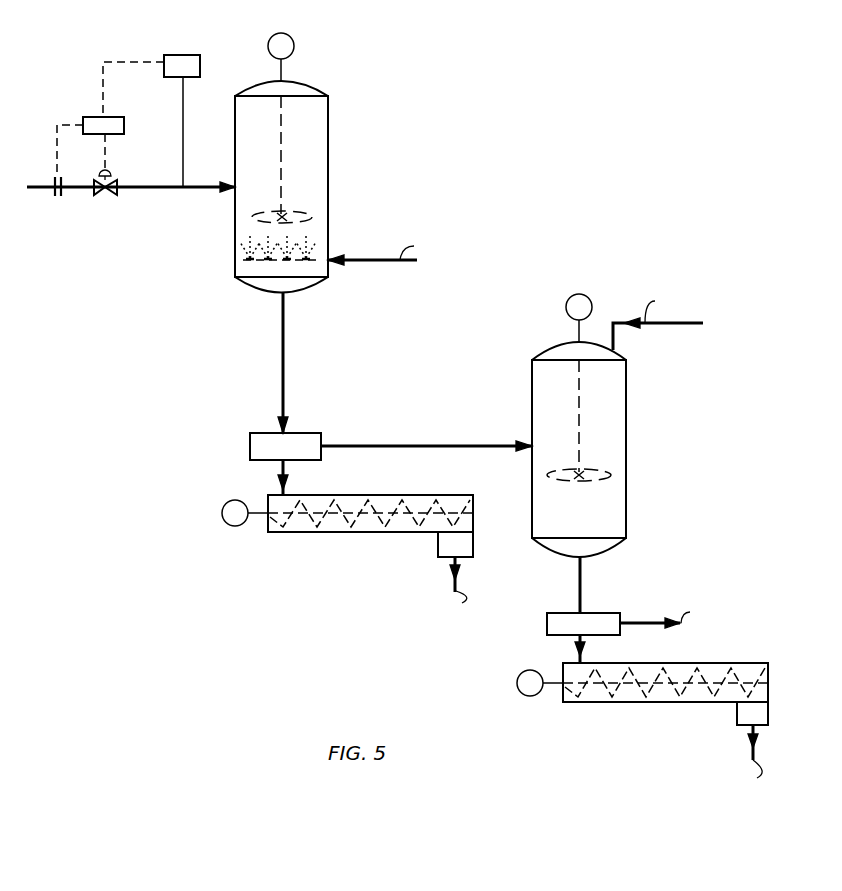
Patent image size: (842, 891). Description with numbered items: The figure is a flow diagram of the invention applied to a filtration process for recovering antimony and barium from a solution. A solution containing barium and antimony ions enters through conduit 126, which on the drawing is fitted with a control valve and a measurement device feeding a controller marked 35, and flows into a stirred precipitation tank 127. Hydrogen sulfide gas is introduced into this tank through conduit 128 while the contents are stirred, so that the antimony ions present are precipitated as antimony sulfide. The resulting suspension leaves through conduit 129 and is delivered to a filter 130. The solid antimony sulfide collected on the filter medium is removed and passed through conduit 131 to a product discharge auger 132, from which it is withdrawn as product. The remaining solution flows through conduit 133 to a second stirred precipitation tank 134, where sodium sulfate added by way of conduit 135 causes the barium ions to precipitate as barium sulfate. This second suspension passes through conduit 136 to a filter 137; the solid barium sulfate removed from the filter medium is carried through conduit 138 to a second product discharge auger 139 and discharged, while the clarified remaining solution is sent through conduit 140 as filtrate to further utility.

The analyzer controller 35 is at (180, 55).
The conduit 126 is at (172, 186).
The precipitation tank 127 is at (322, 157).
The conduit 128 is at (376, 260).
The conduit 129 is at (285, 357).
The filter 130 is at (250, 445).
The conduit 131 is at (286, 484).
The product discharge auger 132 is at (295, 532).
The conduit 133 is at (440, 446).
The second stirred precipitation tank 134 is at (626, 490).
The conduit 135 is at (669, 325).
The conduit 136 is at (581, 575).
The filter 137 is at (571, 613).
The conduit 138 is at (583, 655).
The product discharge auger 139 is at (683, 663).
The conduit 140 is at (633, 623).